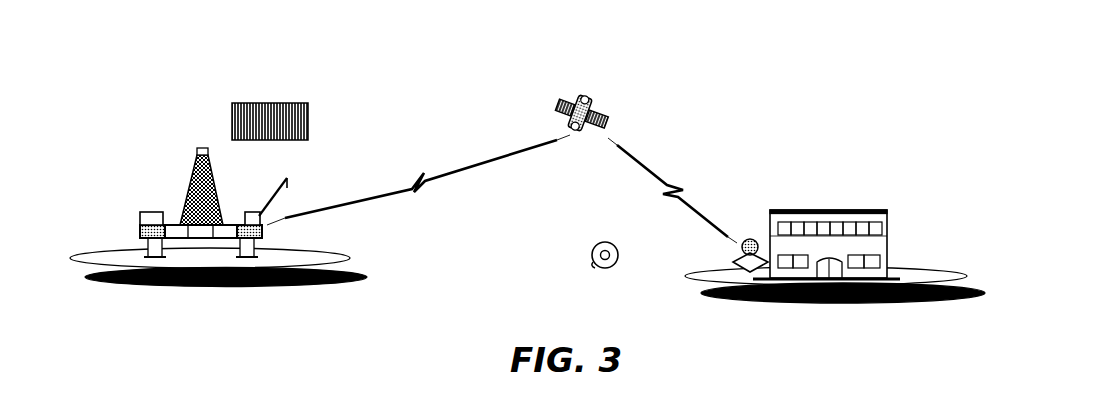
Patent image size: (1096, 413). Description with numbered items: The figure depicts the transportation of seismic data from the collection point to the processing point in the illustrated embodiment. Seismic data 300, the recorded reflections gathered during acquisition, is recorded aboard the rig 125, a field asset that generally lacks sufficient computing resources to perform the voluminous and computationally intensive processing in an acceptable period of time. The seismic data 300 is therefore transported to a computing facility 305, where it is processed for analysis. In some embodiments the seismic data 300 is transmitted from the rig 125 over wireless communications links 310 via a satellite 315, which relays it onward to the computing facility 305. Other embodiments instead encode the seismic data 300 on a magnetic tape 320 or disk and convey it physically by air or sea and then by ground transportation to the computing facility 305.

The rig 125 is at (142, 209).
The seismic data 300 is at (307, 104).
The computing facility 305 is at (888, 212).
The wireless communications links 310 is at (500, 156).
The satellite 315 is at (585, 88).
The magnetic tape 320 is at (590, 247).